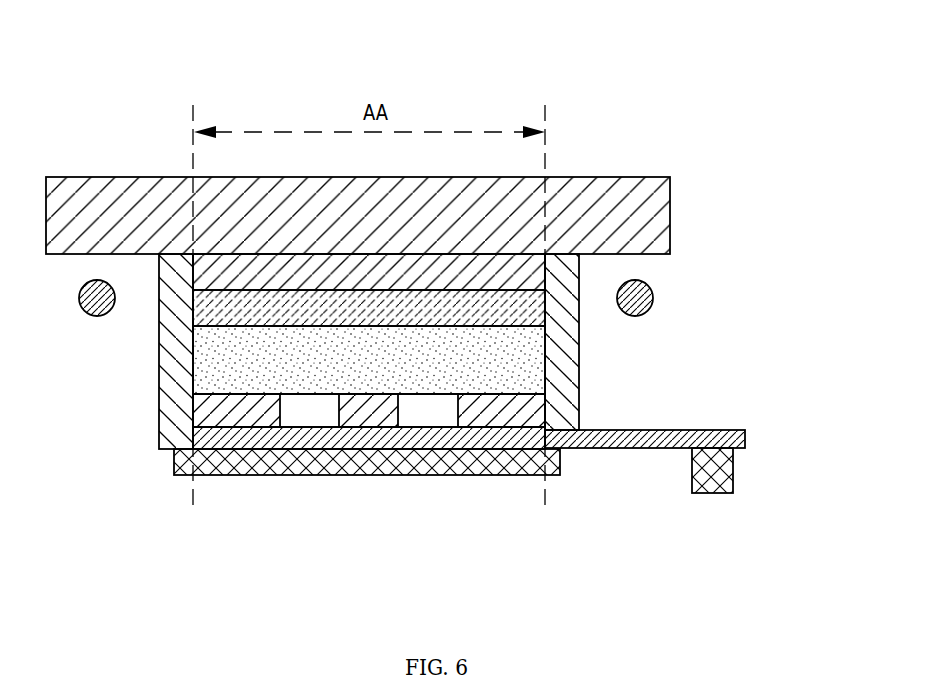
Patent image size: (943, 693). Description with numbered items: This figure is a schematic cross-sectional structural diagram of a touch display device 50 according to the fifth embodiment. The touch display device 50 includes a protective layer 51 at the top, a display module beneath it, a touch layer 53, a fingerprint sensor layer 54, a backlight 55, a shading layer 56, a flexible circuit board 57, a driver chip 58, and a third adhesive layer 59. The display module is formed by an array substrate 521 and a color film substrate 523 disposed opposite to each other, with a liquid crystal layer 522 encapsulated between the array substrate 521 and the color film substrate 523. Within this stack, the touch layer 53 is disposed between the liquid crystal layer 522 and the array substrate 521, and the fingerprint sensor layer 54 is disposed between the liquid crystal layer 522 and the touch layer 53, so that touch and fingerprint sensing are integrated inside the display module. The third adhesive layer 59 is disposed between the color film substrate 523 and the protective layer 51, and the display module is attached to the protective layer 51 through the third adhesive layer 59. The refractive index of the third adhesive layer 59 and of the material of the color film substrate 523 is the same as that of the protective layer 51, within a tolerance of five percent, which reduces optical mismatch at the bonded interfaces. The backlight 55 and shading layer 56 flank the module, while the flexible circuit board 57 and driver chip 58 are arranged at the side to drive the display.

The touch display device 50 is at (636, 112).
The protective layer 51 is at (672, 185).
The touch layer 53 is at (417, 476).
The fingerprint sensor layer 54 is at (579, 387).
The backlight 55 is at (82, 305).
The shading layer 56 is at (177, 385).
The flexible circuit board 57 is at (733, 428).
The driver chip 58 is at (735, 460).
The third adhesive layer 59 is at (205, 268).
The array substrate 521 is at (303, 476).
The liquid crystal layer 522 is at (207, 345).
The color film substrate 523 is at (252, 312).